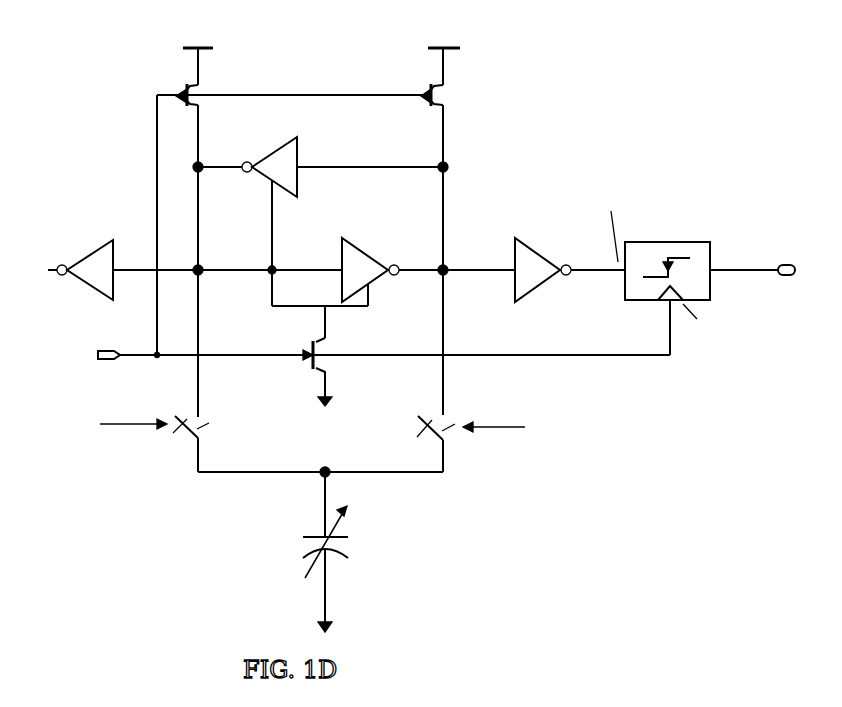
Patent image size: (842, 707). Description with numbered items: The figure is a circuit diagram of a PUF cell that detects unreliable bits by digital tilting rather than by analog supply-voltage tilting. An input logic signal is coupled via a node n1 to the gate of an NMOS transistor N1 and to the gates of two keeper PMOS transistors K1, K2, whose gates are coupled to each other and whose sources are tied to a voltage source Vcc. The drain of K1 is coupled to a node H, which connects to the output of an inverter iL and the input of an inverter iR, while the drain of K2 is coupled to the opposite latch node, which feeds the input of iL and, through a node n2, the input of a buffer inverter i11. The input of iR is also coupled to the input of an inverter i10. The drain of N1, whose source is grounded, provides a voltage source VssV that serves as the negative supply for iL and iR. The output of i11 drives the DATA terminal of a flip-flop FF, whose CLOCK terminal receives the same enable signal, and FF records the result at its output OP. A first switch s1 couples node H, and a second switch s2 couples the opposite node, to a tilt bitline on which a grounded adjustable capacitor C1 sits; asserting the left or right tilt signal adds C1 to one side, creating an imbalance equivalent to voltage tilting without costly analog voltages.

The voltage source Vcc is at (319, 55).
The PMOS transistor K1 is at (179, 85).
The PMOS transistor K2 is at (443, 95).
The node H is at (207, 168).
The inverter iL is at (268, 221).
The inverter iR is at (373, 270).
The inverter i10 is at (195, 262).
The buffer inverter i11 is at (570, 263).
The node n2 is at (457, 262).
The node n1 is at (152, 370).
The flip-flop FF is at (670, 259).
The data terminal DATA is at (627, 225).
The clock terminal CLOCK is at (714, 327).
The output OP is at (752, 262).
The NMOS transistor N1 is at (329, 371).
The voltage source VssV is at (279, 325).
The first switch s1 is at (208, 444).
The second switch s2 is at (420, 444).
The adjustable capacitor C1 is at (345, 552).